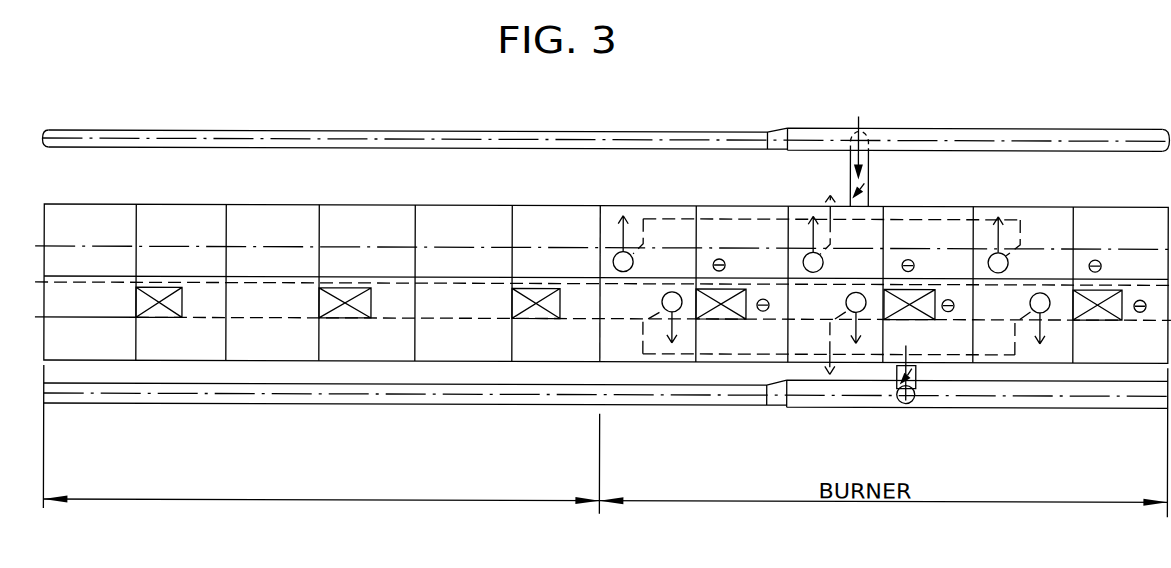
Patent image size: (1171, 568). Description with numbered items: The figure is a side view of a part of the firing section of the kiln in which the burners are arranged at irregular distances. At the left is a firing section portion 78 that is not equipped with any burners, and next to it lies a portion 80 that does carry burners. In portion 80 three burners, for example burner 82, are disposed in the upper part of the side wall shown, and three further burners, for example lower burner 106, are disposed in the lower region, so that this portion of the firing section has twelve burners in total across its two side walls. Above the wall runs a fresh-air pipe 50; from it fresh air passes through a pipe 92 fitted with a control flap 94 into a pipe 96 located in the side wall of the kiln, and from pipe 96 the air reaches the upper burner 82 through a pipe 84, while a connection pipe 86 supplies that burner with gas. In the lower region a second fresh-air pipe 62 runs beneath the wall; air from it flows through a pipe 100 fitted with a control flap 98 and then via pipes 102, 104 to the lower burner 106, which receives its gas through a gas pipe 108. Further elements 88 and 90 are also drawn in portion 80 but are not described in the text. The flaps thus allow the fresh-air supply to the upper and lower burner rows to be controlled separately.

The pipe 50 is at (232, 130).
The pipe 62 is at (253, 393).
The firing section portion 78 is at (178, 204).
The firing section portion 80 is at (657, 202).
The burner 82 is at (633, 257).
The pipe 84 is at (647, 232).
The connection pipe 86 is at (623, 230).
The air mixing chamber 88 is at (740, 316).
The pilot port 90 is at (726, 261).
The pipe 92 is at (866, 160).
The control flap 94 is at (866, 186).
The pipe 96 is at (722, 215).
The control flap 98 is at (911, 370).
The pipe 100 is at (899, 381).
The pipe 102 is at (772, 349).
The pipe 104 is at (648, 325).
The lower burner 106 is at (661, 296).
The gas pipe 108 is at (678, 332).